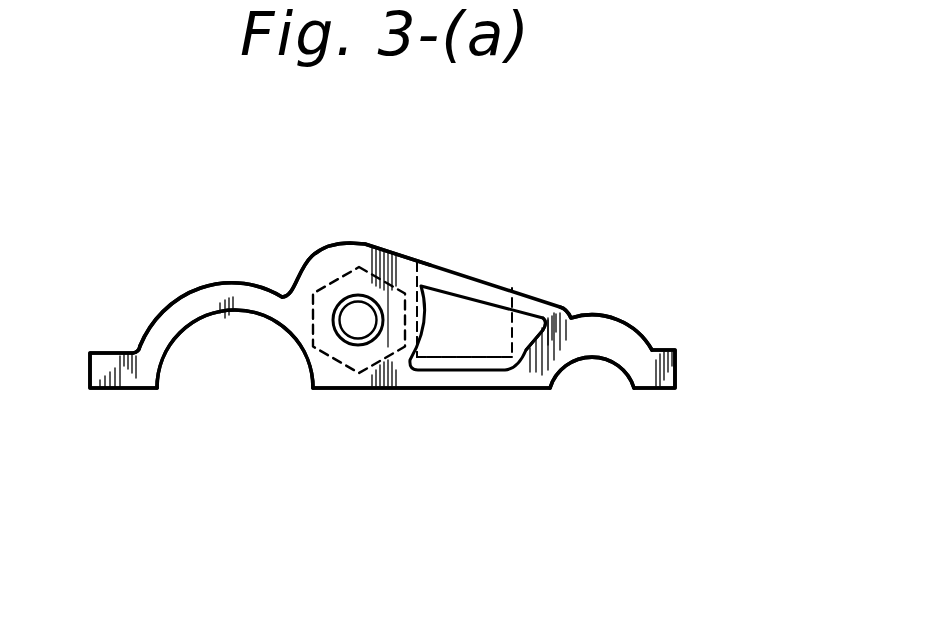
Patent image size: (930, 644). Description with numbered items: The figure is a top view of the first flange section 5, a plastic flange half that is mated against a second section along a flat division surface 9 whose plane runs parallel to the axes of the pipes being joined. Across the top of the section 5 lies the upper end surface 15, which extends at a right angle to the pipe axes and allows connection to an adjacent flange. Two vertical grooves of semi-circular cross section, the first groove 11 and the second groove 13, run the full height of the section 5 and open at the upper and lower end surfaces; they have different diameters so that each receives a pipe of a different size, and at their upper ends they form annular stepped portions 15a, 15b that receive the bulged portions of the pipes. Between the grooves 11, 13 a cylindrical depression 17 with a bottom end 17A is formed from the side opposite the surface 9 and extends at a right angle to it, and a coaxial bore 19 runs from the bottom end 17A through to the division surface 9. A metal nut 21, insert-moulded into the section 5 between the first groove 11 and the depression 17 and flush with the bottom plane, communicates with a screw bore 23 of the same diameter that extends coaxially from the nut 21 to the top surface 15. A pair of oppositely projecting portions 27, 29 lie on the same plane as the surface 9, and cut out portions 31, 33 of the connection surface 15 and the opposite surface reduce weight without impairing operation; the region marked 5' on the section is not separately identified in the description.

The first flange section 5 is at (382, 257).
The arm section portion 5' is at (382, 292).
The division surface 9 is at (398, 388).
The first groove 11 is at (228, 310).
The second groove 13 is at (597, 343).
The upper end surface 15 is at (315, 272).
The annular stepped portion 15a is at (305, 360).
The annular stepped portion 15b is at (553, 370).
The cylindrical depression 17 is at (468, 313).
The bottom end of the depression 17A is at (503, 357).
The bore 19 is at (467, 358).
The nut 21 is at (348, 268).
The screw bore 23 is at (360, 324).
The projecting portion 27 is at (102, 372).
The projecting portion 29 is at (680, 367).
The cut out portion 31 is at (546, 318).
The cut out portion 33 is at (525, 327).